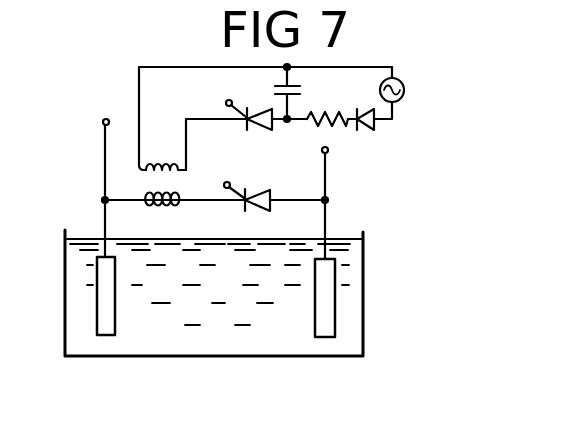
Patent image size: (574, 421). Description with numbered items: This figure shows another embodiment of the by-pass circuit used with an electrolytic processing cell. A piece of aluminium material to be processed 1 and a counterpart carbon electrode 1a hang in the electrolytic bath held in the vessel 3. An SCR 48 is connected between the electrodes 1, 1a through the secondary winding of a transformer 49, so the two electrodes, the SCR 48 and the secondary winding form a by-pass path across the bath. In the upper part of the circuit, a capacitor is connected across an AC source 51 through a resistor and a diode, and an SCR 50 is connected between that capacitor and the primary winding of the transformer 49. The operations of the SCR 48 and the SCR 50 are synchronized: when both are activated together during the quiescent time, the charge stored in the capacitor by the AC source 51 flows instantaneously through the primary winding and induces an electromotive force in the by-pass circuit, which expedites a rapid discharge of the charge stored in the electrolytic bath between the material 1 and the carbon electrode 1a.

The material to be processed 1 is at (103, 300).
The carbon electrode 1a is at (325, 316).
The vessel 3 is at (203, 358).
The SCR 48 is at (262, 191).
The transformer 49 is at (173, 182).
The SCR 50 is at (261, 131).
The AC source 51 is at (404, 92).